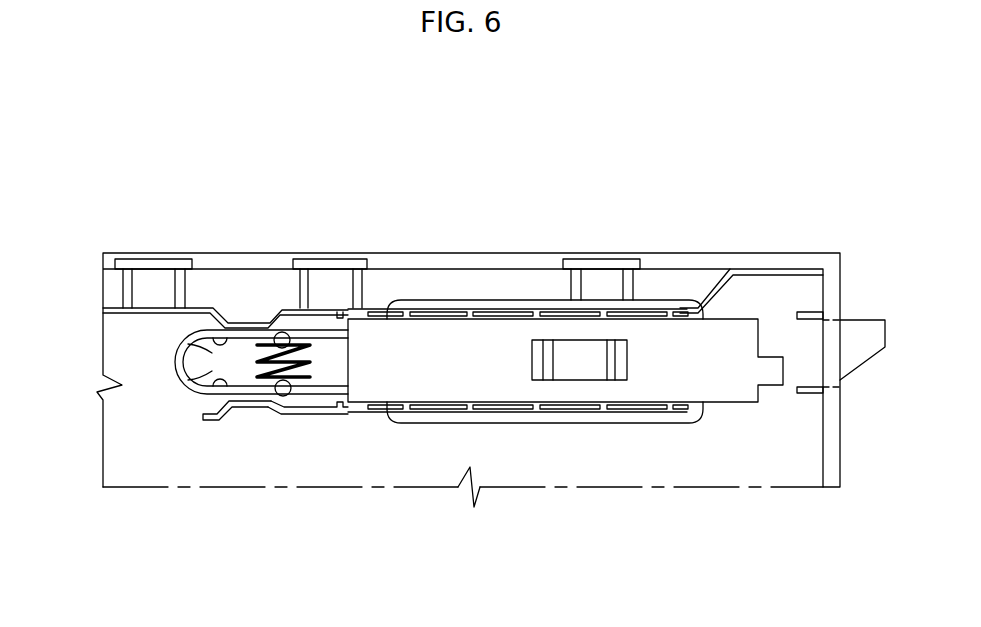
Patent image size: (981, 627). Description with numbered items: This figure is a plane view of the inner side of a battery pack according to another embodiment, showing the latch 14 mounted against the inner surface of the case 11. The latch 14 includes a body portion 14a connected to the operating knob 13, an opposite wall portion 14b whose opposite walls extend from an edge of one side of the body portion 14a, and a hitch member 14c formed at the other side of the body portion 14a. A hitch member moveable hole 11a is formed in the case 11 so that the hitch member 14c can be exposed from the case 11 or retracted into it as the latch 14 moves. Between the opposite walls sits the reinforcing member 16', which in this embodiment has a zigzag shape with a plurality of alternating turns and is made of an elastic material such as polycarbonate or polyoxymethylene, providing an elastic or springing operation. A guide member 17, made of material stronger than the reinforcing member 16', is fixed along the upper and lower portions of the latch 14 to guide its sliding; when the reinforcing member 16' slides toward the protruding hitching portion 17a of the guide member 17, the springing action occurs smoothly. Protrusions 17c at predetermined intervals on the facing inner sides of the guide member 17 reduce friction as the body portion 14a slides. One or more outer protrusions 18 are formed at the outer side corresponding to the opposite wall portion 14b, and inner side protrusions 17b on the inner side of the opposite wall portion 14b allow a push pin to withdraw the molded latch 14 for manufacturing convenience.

The case 11 is at (680, 470).
The hitch member moveable hole 11a is at (830, 345).
The operating knob 13 is at (613, 423).
The latch 14 is at (860, 143).
The body portion 14a is at (437, 358).
The opposite wall portion 14b is at (247, 333).
The hitch member 14c is at (860, 340).
The reinforcing member 16' is at (299, 281).
The guide member 17 is at (322, 414).
The protruding hitching portion 17a is at (247, 402).
The inner side protrusion 17b is at (192, 366).
The protrusion 17c is at (484, 321).
The outer protrusions 18 is at (262, 333).